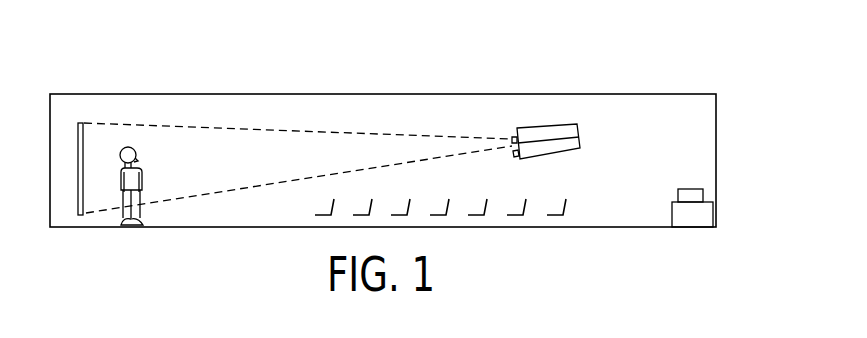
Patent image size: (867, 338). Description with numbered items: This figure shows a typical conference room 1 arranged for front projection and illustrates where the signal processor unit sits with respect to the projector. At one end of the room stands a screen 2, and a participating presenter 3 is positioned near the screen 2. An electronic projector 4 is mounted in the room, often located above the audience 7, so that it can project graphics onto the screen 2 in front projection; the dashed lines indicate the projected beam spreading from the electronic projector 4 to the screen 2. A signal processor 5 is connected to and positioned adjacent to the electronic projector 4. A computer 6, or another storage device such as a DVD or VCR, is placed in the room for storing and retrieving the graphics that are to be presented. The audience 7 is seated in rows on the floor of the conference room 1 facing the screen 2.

The conference room 1 is at (93, 94).
The screen 2 is at (88, 132).
The participating presenter 3 is at (137, 153).
The electronic projector 4 is at (553, 127).
The signal processor 5 is at (583, 152).
The computer 6 is at (695, 189).
The audience 7 is at (566, 203).